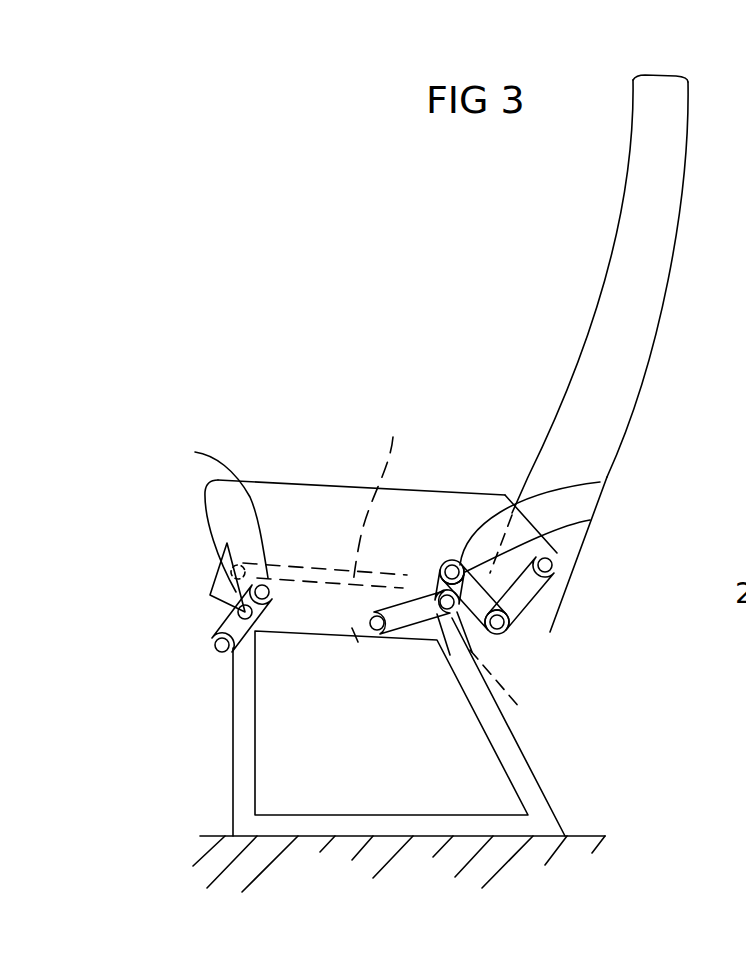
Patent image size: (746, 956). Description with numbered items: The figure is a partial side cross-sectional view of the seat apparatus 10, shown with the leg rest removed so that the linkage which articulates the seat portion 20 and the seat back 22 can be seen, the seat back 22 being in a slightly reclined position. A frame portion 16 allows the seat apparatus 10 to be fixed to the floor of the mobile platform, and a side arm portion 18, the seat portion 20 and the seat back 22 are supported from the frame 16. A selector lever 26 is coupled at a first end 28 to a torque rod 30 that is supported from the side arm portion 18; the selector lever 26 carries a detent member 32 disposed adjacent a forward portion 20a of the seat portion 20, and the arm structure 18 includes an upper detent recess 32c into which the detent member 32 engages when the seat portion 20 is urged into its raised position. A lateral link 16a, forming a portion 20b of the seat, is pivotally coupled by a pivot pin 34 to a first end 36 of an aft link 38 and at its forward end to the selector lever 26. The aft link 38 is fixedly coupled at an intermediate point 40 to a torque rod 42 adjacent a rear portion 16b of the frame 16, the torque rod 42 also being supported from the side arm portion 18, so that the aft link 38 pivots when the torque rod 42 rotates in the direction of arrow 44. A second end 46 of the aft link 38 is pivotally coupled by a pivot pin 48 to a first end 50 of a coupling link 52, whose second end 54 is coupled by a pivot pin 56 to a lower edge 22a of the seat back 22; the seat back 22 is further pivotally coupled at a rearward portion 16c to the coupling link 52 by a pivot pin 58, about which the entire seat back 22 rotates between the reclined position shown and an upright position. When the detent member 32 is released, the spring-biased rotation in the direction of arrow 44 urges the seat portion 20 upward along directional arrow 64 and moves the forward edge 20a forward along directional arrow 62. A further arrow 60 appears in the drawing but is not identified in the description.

The seat apparatus 10 is at (339, 264).
The frame portion 16 is at (560, 770).
The lateral link 16a is at (392, 452).
The rear portion 16b is at (520, 706).
The rearward portion 16c is at (575, 535).
The arm portion 18 is at (262, 490).
The seat portion 20 is at (202, 570).
The forward portion 20a is at (238, 611).
The portion of the seat 20b is at (353, 632).
The seat back 22 is at (623, 243).
The lower edge 22a is at (508, 652).
The selector lever 26 is at (189, 638).
The first end 28 is at (238, 568).
The torque rod 30 is at (270, 598).
The detent member 32 is at (222, 600).
The upper detent recess 32c is at (225, 562).
The pivot pin 34 is at (391, 640).
The first end 36 is at (381, 645).
The aft link 38 is at (411, 575).
The intermediate point 40 is at (445, 622).
The torque rod 42 is at (440, 593).
The arrow 44 is at (318, 622).
The second end 46 is at (465, 562).
The pivot pin 48 is at (568, 484).
The first end 50 is at (576, 520).
The coupling link 52 is at (500, 592).
The second end 54 is at (510, 628).
The pivot pin 56 is at (510, 621).
The pivot pin 58 is at (553, 565).
The direction arrow 60 is at (208, 696).
The directional arrow 62 is at (307, 518).
The directional arrow 64 is at (313, 497).